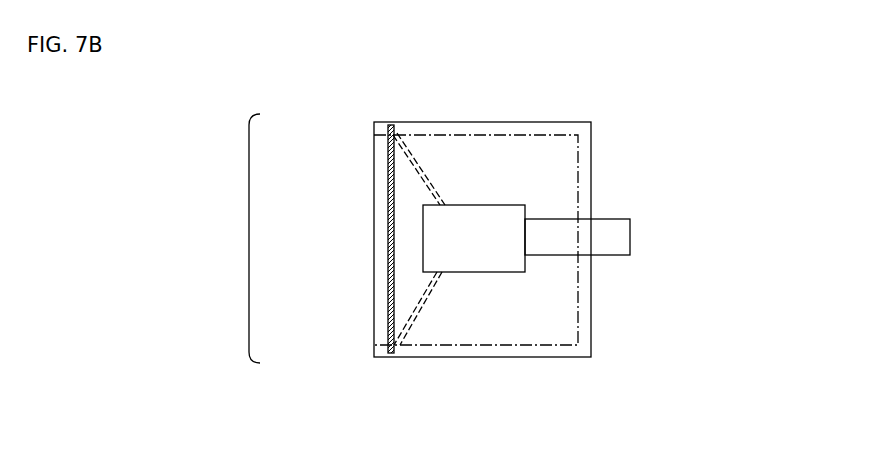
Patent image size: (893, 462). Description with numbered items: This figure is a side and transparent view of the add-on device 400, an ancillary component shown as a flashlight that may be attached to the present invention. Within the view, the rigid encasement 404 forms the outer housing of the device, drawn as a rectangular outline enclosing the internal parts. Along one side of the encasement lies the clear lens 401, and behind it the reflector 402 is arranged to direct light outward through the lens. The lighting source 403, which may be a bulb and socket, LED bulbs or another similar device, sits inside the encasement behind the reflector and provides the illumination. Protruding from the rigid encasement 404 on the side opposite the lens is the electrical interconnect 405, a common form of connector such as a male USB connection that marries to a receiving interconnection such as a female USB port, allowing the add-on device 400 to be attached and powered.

The add-on device 400 is at (249, 238).
The clear lens 401 is at (388, 275).
The reflector 402 is at (415, 173).
The lighting source 403 is at (473, 265).
The rigid encasement 404 is at (585, 123).
The electrical interconnect 405 is at (623, 240).